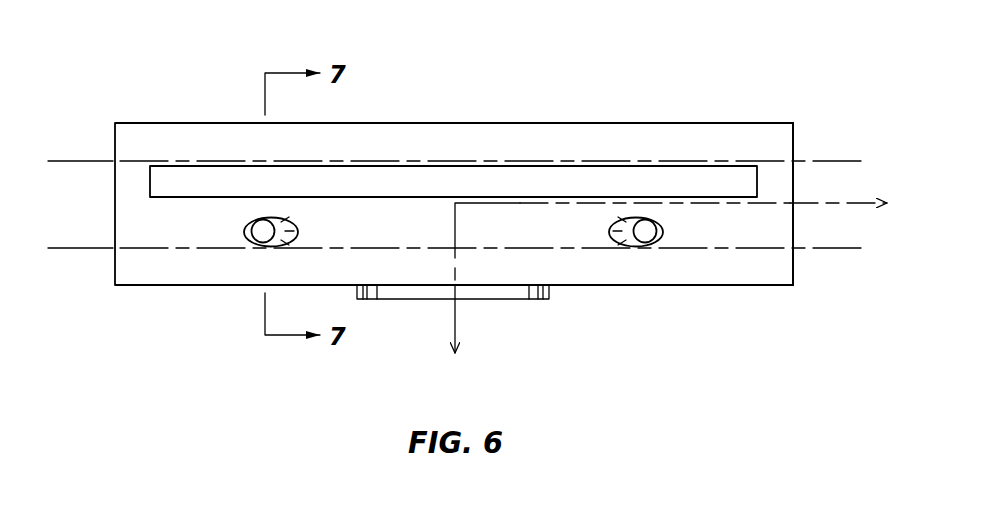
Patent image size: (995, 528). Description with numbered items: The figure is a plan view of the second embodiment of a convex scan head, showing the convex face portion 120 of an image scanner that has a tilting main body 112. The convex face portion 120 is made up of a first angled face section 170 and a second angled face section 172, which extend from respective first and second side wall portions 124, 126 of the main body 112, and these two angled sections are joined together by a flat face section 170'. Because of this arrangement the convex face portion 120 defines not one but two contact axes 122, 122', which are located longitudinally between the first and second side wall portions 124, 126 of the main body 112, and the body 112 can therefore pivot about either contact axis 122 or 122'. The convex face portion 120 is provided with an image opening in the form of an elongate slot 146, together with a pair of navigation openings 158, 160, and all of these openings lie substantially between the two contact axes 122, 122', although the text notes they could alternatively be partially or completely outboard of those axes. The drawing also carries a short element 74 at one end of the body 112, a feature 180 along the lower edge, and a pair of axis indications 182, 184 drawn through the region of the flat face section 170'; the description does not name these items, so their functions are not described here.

The convex face portion 120 is at (181, 110).
The main body 112 is at (795, 138).
The first side wall portion 124 is at (620, 122).
The second side wall portion 126 is at (692, 286).
The end wall 74 is at (795, 272).
The contact axis 122 is at (455, 127).
The contact axis 122' is at (455, 281).
The elongate slot 146 is at (525, 165).
The first angled face section 170 is at (450, 140).
The flat face section 170' is at (622, 230).
The second angled face section 172 is at (520, 279).
The horizontal axis 184 is at (856, 204).
The vertical axis 182 is at (458, 323).
The navigation opening 158 is at (247, 243).
The navigation opening 160 is at (610, 243).
The connector 180 is at (405, 300).